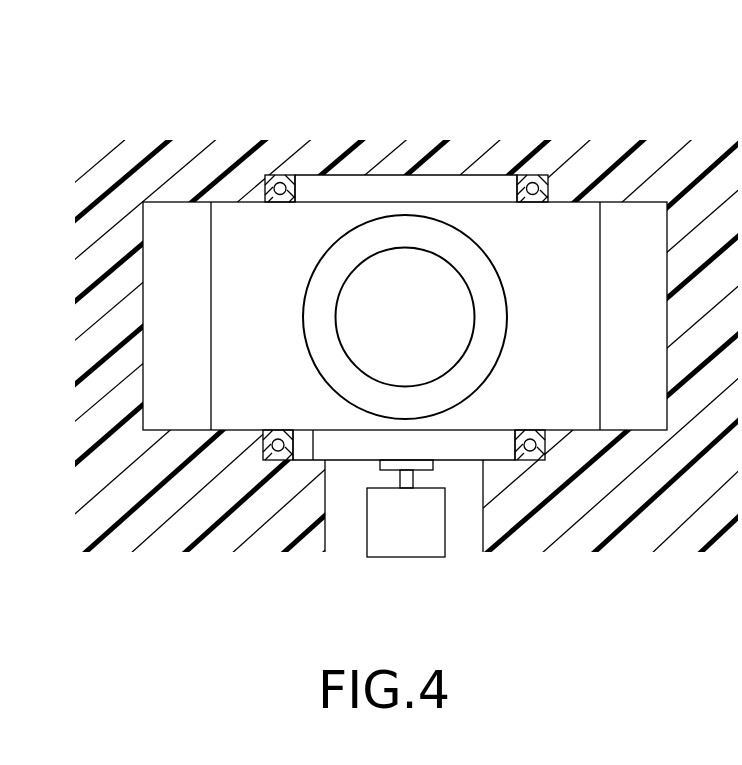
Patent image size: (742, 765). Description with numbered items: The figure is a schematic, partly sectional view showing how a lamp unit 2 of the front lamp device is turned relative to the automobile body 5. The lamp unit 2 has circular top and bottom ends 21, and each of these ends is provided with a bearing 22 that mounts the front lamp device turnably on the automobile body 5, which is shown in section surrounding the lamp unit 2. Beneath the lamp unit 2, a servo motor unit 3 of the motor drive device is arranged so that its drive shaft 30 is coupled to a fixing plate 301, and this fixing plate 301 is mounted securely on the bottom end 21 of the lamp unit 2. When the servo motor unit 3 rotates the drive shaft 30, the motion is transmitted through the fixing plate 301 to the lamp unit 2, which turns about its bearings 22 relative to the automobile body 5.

The lamp unit 2 is at (210, 309).
The servo motor unit 3 is at (404, 520).
The automobile body 5 is at (607, 152).
The circular top and bottom ends 21 is at (446, 175).
The bearing 22 is at (268, 182).
The drive shaft 30 is at (413, 477).
The fixing plate 301 is at (388, 471).